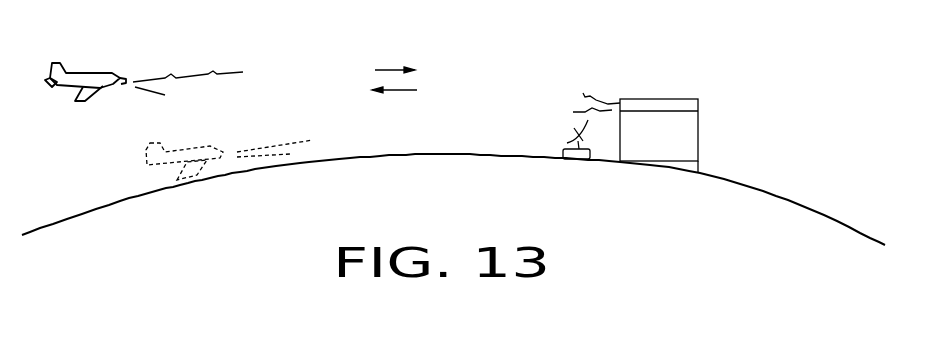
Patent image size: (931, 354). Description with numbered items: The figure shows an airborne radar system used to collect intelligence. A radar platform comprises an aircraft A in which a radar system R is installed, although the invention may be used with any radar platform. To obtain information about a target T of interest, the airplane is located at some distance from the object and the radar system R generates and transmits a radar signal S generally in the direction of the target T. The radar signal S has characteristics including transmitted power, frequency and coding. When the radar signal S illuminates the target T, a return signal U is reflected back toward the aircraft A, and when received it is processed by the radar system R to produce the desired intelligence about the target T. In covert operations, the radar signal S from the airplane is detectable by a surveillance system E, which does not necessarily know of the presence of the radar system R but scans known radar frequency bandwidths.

The aircraft A is at (88, 73).
The radar system R is at (127, 78).
The radar signal S is at (392, 70).
The return signal U is at (402, 91).
The target T is at (677, 100).
The surveillance system E is at (573, 154).